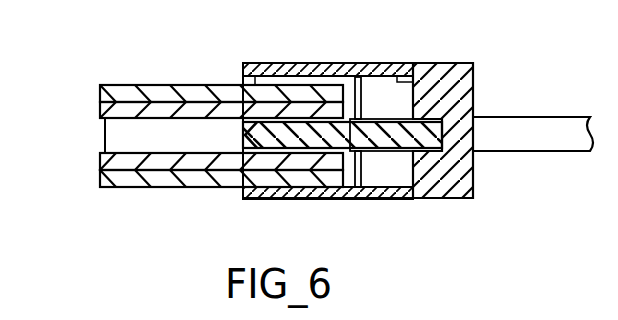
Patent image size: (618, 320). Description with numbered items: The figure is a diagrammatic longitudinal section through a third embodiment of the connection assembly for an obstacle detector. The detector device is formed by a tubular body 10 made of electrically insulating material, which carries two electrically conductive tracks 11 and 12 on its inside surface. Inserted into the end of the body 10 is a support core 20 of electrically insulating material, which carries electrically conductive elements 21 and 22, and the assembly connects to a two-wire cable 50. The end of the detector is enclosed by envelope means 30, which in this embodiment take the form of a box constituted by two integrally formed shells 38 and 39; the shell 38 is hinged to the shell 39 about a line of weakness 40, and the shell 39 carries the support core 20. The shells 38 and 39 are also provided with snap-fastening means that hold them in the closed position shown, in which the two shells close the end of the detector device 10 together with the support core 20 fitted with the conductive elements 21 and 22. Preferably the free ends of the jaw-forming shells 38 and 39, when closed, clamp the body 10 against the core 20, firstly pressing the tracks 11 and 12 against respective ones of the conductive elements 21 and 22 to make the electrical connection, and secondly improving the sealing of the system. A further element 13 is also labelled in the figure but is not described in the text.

The envelope means 30 is at (235, 48).
The shell 38 is at (375, 73).
The line of weakness 40 is at (407, 65).
The shell 39 is at (434, 186).
The tubular body 10 is at (153, 93).
The electrically conductive track 11 is at (108, 110).
The electrically conductive track 12 is at (107, 163).
The cable center conductor 13 is at (117, 137).
The support core 20 is at (380, 150).
The electrically conductive element 22 is at (356, 172).
The electrically conductive element 21 is at (358, 76).
The two-wire cable 50 is at (515, 132).